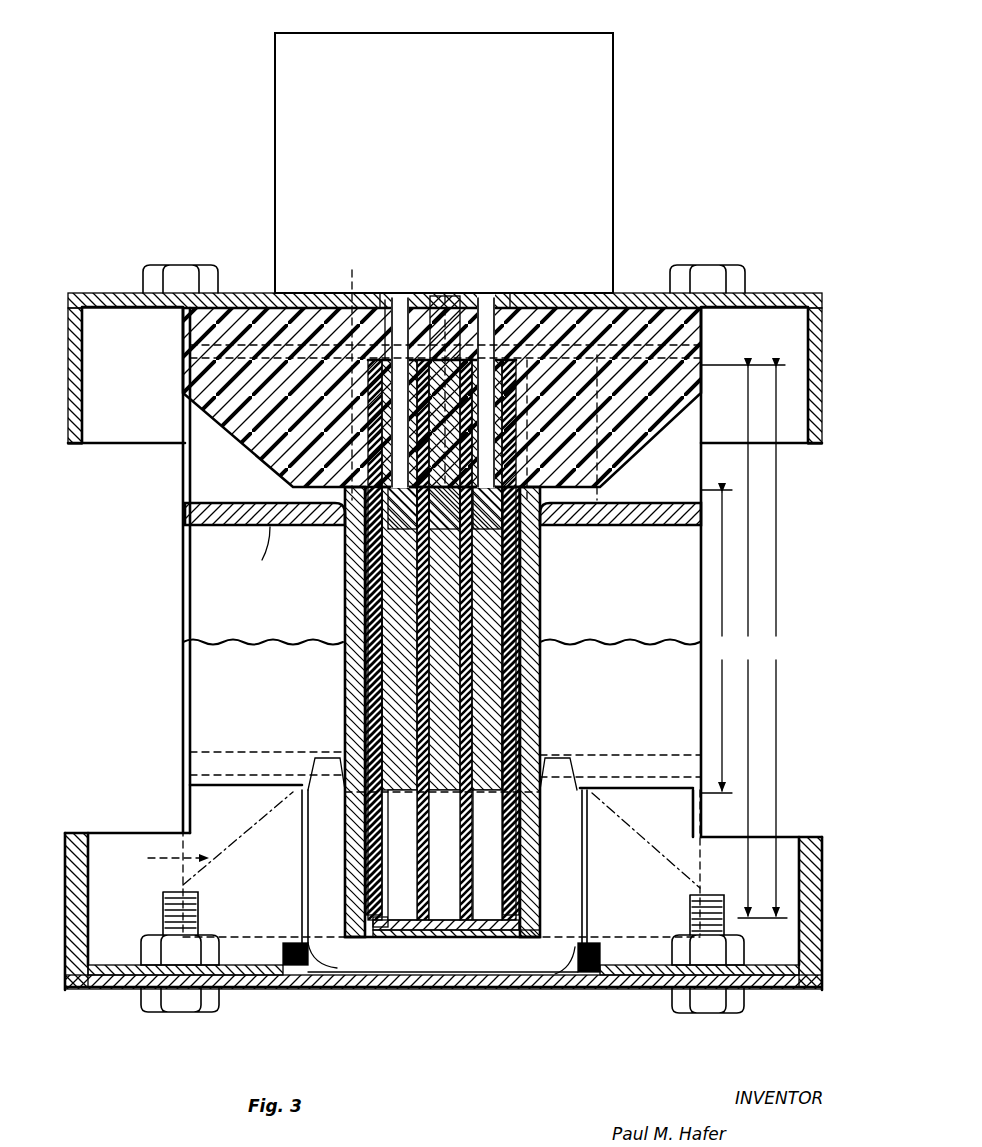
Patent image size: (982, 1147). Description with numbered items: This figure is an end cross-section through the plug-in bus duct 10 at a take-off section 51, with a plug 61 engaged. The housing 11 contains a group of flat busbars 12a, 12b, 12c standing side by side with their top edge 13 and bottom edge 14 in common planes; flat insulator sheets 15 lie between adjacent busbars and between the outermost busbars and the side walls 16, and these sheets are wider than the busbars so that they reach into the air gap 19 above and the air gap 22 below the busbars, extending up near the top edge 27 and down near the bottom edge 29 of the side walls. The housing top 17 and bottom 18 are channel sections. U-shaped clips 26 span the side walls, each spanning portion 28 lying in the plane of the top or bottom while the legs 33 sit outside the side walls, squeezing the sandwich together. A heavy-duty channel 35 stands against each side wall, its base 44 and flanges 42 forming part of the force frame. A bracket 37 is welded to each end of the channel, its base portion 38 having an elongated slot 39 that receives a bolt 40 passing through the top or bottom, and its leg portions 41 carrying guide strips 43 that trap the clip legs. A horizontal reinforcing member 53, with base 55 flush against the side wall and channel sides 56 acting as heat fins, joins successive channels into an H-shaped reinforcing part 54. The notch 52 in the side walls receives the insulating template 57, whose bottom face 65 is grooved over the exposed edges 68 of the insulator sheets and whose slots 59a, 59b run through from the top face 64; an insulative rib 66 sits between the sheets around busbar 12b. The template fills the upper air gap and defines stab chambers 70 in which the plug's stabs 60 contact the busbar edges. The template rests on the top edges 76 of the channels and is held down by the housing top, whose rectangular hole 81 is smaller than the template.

The plug-in bus duct 10 is at (835, 245).
The housing 11 is at (448, 940).
The busbar 12a is at (400, 664).
The busbar 12b is at (440, 690).
The busbar 12c is at (520, 684).
The top edge 13 is at (451, 509).
The bottom edge 14 is at (399, 785).
The insulator sheet 15 is at (515, 884).
The side wall 16 is at (367, 598).
The top 17 is at (640, 300).
The bottom 18 is at (300, 987).
The air gap 19 is at (375, 462).
The air gap 22 is at (487, 895).
The U-shaped clip 26 is at (543, 962).
The top edge 27 is at (455, 300).
The spanning portion 28 is at (330, 988).
The bottom edge 29 is at (398, 976).
The leg 33 is at (302, 848).
The heavy-duty channel 35 is at (183, 495).
The bracket 37 is at (121, 432).
The base portion 38 is at (104, 988).
The elongated slot 39 is at (207, 998).
The bolt 40 is at (181, 278).
The leg portion 41 is at (190, 806).
The flange 42 is at (198, 757).
The guide strip 43 is at (302, 815).
The base 44 is at (355, 840).
The take-off section 51 is at (455, 238).
The notch 52 is at (512, 474).
The horizontal reinforcing member 53 is at (192, 530).
The H-shaped reinforcing part 54 is at (148, 682).
The base 55 is at (350, 574).
The channel side 56 is at (640, 745).
The template 57 is at (582, 268).
The stab slot 59a is at (350, 292).
The stab slot 59b is at (530, 300).
The stab 60 is at (400, 300).
The plug 61 is at (615, 72).
The top face 64 is at (283, 300).
The bottom face 65 is at (293, 487).
The insulative rib 66 is at (455, 442).
The exposed edge 68 is at (605, 350).
The stab chamber 70 is at (338, 396).
The top edge 76 is at (708, 332).
The rectangular hole 81 is at (385, 300).